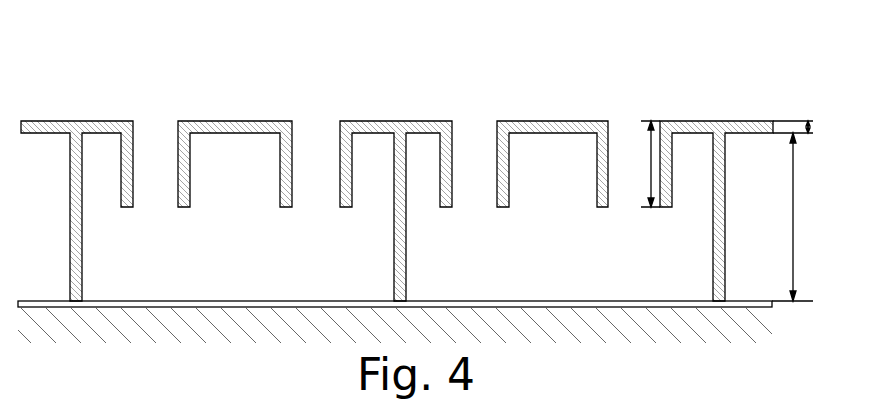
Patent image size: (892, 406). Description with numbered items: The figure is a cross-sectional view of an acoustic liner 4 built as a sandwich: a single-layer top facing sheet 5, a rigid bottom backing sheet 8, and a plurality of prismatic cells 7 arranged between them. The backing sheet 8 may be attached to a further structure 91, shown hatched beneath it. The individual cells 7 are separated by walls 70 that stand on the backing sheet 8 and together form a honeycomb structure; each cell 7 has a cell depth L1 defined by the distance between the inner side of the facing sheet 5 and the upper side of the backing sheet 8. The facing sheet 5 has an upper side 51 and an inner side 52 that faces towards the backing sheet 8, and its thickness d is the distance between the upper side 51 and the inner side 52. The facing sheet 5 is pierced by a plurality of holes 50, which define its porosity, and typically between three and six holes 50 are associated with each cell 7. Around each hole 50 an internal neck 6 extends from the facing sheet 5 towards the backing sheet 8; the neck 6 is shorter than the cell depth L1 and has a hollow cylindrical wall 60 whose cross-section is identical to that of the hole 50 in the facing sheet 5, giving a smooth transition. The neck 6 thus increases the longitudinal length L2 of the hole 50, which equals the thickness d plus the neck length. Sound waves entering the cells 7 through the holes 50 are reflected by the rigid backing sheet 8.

The acoustic liner 4 is at (643, 64).
The facing sheet 5 is at (425, 121).
The internal neck 6 is at (339, 158).
The cell 7 is at (213, 261).
The backing sheet 8 is at (317, 300).
The hole 50 is at (162, 138).
The upper side 51 is at (738, 121).
The inner side 52 is at (747, 133).
The hollow cylindrical wall 60 is at (287, 157).
The wall 70 is at (83, 235).
The further structure 91 is at (740, 322).
The cell depth L1 is at (796, 217).
The longitudinal length of the hole L2 is at (637, 152).
The thickness of the facing sheet d is at (814, 128).